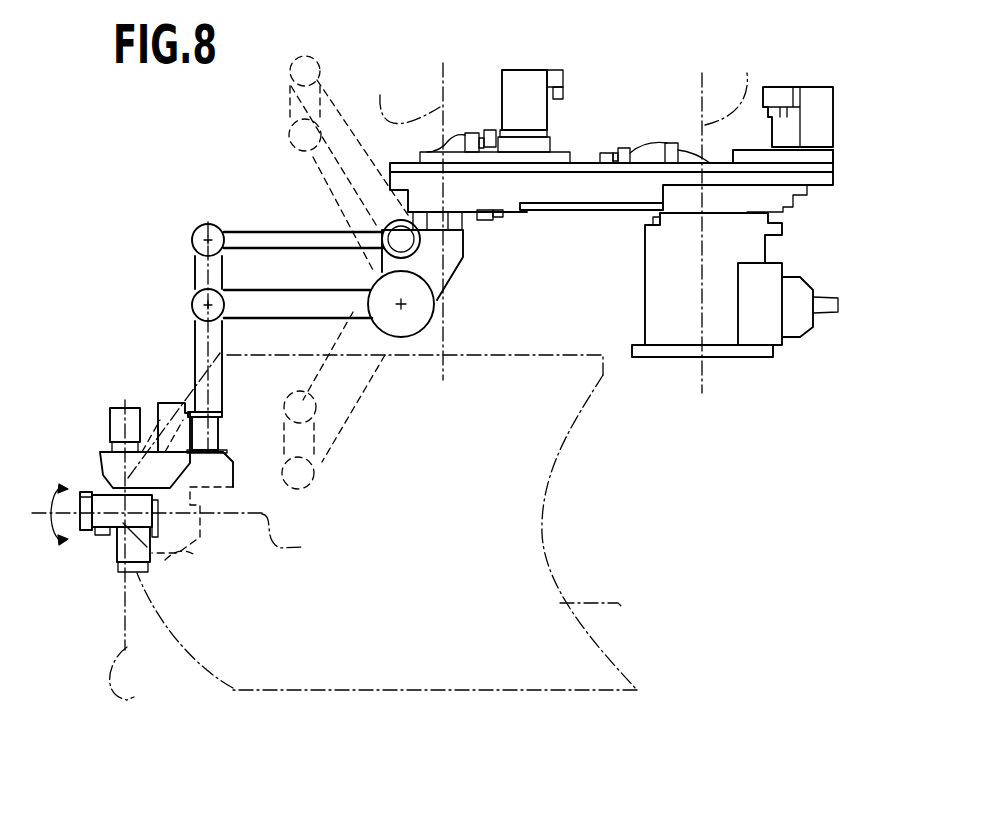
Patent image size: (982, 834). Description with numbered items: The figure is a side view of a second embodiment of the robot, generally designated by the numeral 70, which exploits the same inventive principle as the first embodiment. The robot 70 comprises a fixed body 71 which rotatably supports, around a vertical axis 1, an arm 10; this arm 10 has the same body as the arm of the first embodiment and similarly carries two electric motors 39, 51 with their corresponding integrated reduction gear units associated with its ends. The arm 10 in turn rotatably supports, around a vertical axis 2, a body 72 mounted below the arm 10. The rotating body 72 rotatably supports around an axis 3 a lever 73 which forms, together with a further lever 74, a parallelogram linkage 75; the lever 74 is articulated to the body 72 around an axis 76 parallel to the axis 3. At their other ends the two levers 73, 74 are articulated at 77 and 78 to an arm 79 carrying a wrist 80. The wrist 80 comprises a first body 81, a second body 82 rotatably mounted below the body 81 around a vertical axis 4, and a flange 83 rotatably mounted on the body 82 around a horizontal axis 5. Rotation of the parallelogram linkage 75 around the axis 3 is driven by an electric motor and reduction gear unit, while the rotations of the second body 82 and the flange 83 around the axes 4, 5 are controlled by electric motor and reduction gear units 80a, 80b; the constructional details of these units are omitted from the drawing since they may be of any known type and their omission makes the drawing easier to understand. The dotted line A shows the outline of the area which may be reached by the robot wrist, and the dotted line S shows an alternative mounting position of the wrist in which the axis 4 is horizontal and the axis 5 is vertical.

The vertical axis 1 is at (726, 92).
The vertical axis 2 is at (411, 221).
The axis 3 is at (403, 306).
The vertical axis 4 is at (133, 553).
The horizontal axis 5 is at (176, 537).
The arm 10 is at (581, 166).
The electric motor 39 is at (827, 118).
The electric motor 51 is at (524, 88).
The robot 70 is at (829, 235).
The fixed body 71 is at (745, 245).
The body 72 is at (437, 262).
The lever 73 is at (298, 323).
The lever 74 is at (247, 230).
The parallelogram linkage 75 is at (197, 333).
The axis 76 is at (383, 229).
The articulation 77 is at (198, 292).
The articulation 78 is at (197, 230).
The arm 79 is at (213, 388).
The wrist 80 is at (172, 493).
The electric motor and reduction gear unit 80a is at (118, 422).
The electric motor and reduction gear unit 80b is at (143, 563).
The first body 81 is at (173, 418).
The second body 82 is at (100, 535).
The flange 83 is at (88, 497).
The dotted line S is at (182, 555).
The dotted line A is at (387, 522).